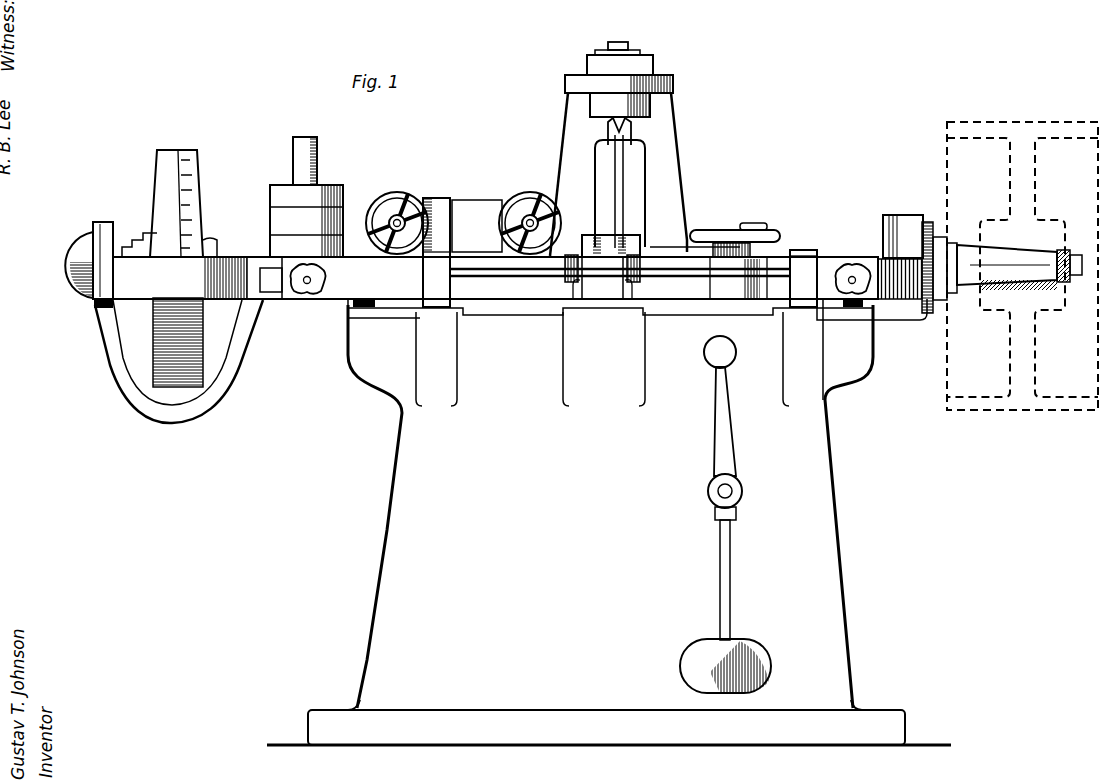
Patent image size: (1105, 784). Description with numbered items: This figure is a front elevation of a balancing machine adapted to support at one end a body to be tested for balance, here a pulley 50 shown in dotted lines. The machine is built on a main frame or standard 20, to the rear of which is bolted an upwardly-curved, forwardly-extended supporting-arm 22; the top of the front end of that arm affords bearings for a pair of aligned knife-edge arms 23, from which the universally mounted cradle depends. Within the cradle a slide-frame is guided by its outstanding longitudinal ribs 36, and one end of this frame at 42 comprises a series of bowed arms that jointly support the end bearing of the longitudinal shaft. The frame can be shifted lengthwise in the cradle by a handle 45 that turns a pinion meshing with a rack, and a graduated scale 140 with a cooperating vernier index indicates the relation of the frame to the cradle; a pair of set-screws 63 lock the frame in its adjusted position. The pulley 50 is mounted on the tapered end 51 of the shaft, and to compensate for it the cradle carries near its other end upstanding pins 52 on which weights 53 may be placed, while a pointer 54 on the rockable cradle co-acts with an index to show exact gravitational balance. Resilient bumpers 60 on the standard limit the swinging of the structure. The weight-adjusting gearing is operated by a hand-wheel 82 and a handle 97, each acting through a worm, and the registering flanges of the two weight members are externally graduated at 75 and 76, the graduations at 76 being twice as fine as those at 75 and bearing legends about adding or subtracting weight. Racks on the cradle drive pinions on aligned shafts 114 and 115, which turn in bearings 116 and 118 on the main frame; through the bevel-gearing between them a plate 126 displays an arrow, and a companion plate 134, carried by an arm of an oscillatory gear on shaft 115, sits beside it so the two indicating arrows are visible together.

The main frame or standard 20 is at (830, 481).
The supporting-arm 22 is at (675, 153).
The knife-edge arms 23 is at (587, 63).
The longitudinal ribs 36 is at (893, 265).
The end of slide-frame with bowed arms 42 is at (172, 425).
The handle 45 is at (714, 231).
The pulley 50 is at (1024, 132).
The tapered end of shaft 51 is at (965, 255).
The upstanding pins 52 is at (305, 142).
The weights 53 is at (330, 186).
The pointer 54 is at (623, 193).
The resilient bumper 60 is at (352, 312).
The set-screws 63 is at (323, 281).
The graduations on flange 75 is at (165, 153).
The graduations on flange 76 is at (195, 153).
The hand-wheel 82 is at (400, 193).
The handle 97 is at (527, 195).
The shaft 114 is at (500, 276).
The shaft 115 is at (766, 283).
The bearing 116 is at (430, 282).
The bearing 118 is at (800, 250).
The plate 126 is at (570, 272).
The plate 134 is at (645, 270).
The graduated scale 140 is at (732, 367).